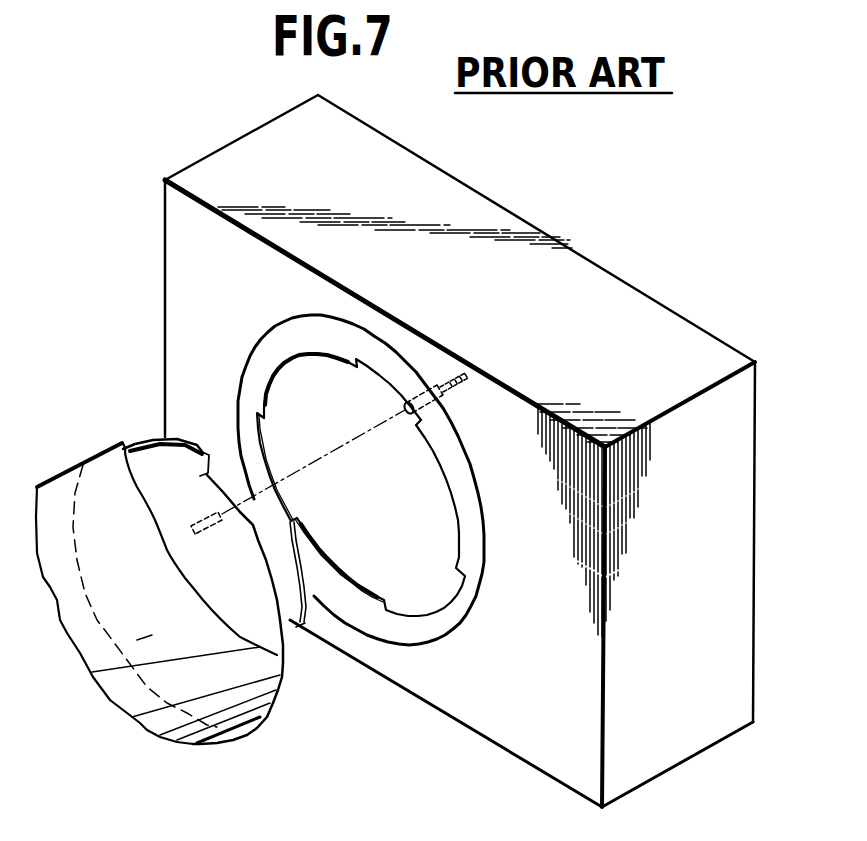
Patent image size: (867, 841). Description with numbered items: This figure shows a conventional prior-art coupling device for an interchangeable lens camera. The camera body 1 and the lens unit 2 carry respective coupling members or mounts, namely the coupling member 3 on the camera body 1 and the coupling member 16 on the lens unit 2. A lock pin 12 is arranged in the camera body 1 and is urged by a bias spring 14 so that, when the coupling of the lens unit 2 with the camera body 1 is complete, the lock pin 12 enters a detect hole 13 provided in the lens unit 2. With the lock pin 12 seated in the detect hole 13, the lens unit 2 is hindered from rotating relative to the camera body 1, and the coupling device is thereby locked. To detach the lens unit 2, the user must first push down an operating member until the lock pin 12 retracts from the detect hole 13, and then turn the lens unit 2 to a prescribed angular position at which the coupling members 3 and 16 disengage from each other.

The camera body 1 is at (498, 733).
The lens unit 2 is at (223, 740).
The coupling member 3 is at (252, 364).
The lock pin 12 is at (437, 415).
The detect hole 13 is at (205, 530).
The bias spring 14 is at (480, 360).
The coupling member 16 is at (299, 633).